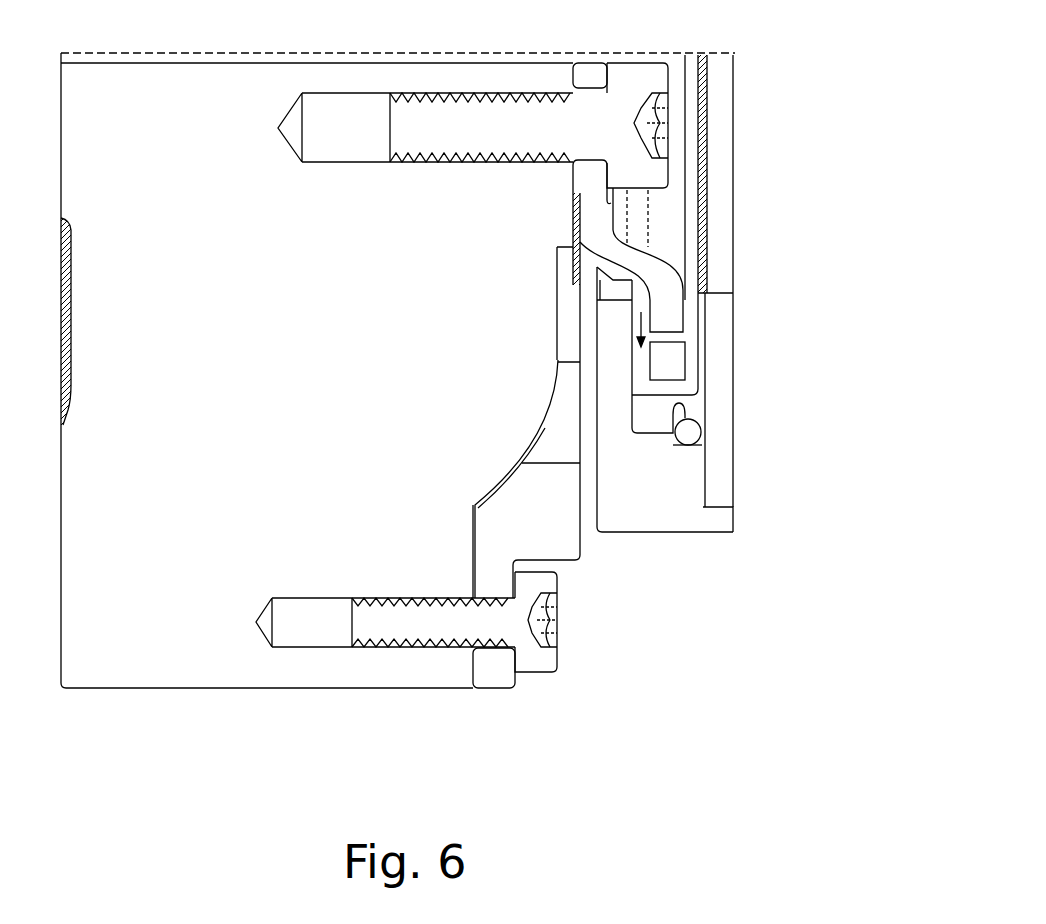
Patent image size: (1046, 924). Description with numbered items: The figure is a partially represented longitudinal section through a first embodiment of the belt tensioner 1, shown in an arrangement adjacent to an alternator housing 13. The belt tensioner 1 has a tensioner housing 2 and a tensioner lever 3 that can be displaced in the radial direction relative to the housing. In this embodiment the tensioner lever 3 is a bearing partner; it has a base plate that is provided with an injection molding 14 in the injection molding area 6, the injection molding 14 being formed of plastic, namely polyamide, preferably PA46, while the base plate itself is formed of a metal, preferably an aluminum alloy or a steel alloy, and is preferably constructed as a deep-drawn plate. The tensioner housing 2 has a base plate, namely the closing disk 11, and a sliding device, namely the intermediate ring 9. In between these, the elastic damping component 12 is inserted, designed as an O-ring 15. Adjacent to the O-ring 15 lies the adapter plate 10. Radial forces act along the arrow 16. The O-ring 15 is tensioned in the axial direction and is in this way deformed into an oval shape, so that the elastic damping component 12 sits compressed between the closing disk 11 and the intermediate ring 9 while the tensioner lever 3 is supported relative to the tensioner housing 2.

The belt tensioner 1 is at (568, 702).
The tensioner housing 2 is at (633, 560).
The tensioner lever 3 is at (672, 256).
The injection molding area 6 is at (690, 385).
The intermediate ring 9 is at (648, 414).
The adapter plate 10 is at (720, 477).
The closing disk 11 is at (672, 512).
The elastic damping component 12 is at (773, 440).
The alternator housing 13 is at (394, 702).
The injection molding 14 is at (743, 362).
The O-ring 15 is at (688, 433).
The arrow 16 is at (643, 321).